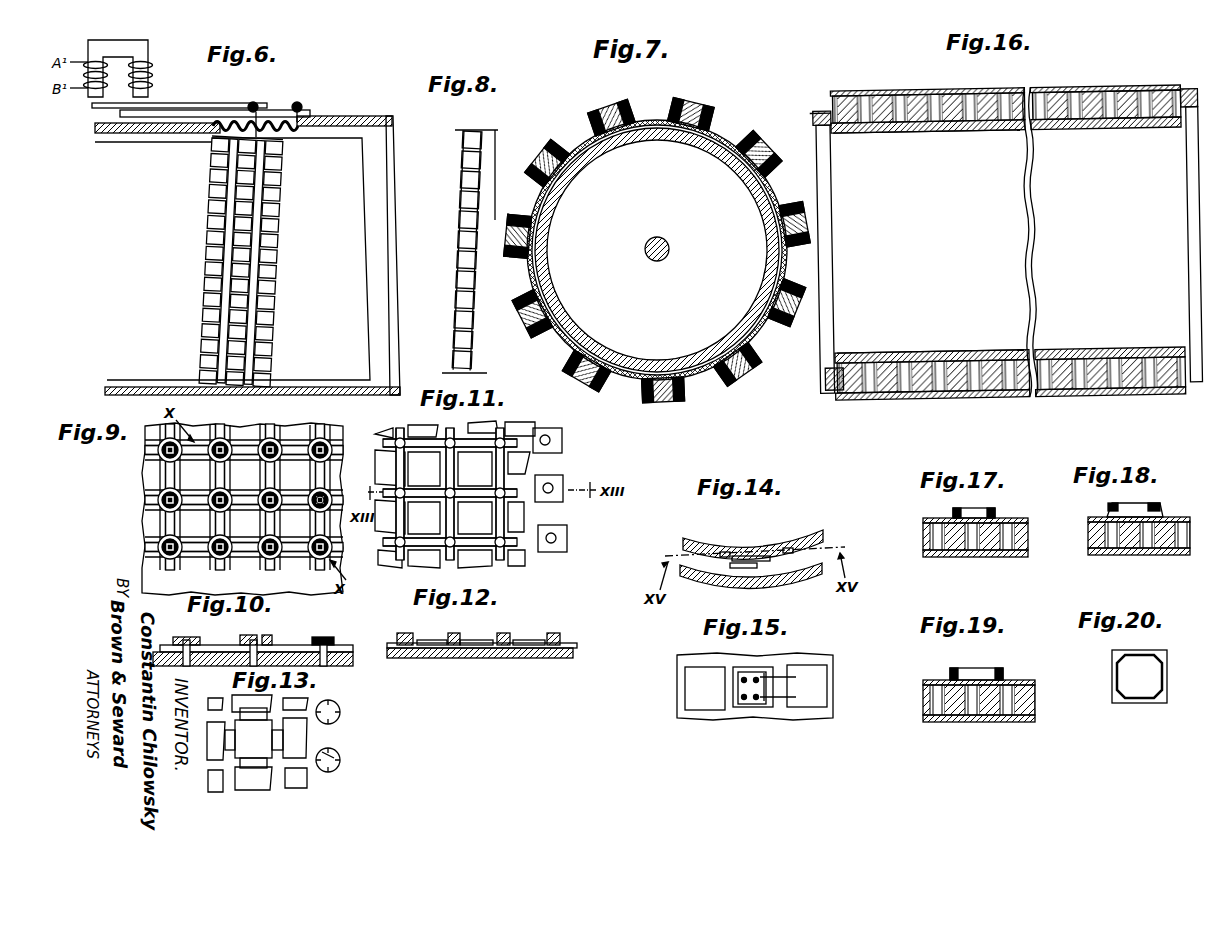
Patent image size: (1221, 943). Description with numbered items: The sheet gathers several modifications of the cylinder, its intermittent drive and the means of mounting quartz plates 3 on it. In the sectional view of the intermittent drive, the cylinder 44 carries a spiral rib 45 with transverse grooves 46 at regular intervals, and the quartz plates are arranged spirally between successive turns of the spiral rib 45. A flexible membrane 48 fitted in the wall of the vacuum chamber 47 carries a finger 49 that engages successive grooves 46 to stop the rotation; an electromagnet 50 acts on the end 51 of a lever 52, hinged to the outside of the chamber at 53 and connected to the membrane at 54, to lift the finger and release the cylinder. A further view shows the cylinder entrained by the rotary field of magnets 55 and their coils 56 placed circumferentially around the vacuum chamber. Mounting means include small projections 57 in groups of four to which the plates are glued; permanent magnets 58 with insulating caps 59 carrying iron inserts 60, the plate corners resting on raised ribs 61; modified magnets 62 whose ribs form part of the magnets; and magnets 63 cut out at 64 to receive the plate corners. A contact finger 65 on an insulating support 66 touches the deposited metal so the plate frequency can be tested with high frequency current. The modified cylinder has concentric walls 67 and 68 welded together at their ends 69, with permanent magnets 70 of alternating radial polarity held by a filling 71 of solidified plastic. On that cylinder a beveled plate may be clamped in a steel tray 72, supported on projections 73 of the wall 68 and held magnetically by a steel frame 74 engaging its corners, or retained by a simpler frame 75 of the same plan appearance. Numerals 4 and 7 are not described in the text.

In FIG. 6, the quartz plates 3 is at (281, 184).
In FIG. 8, the quartz plates 3 is at (463, 215).
In FIG. 9, the quartz plates 3 is at (242, 509).
In FIG. 11, the quartz plates 3 is at (455, 494).
In FIG. 10, the quartz plates 3 is at (292, 645).
In FIG. 12, the quartz plates 3 is at (430, 643).
In FIG. 13, the quartz plates 3 is at (257, 743).
In FIG. 14, the quartz plates 3 is at (745, 553).
In FIG. 15, the quartz plates 3 is at (695, 690).
In FIG. 17, the quartz plates 3 is at (974, 499).
In FIG. 7, the shaft 4 is at (650, 260).
In FIG. 15, the plate 7 is at (745, 708).
In FIG. 6, the cylinder 44 is at (232, 259).
In FIG. 6, the spiral rib 45 is at (212, 205).
In FIG. 6, the transverse grooves 46 is at (212, 300).
In FIG. 6, the vacuum chamber 47 is at (350, 120).
In FIG. 6, the flexible membrane 48 is at (268, 122).
In FIG. 6, the finger 49 is at (216, 148).
In FIG. 6, the electromagnet 50 is at (148, 50).
In FIG. 6, the lever end 51 is at (179, 95).
In FIG. 6, the lever 52 is at (215, 110).
In FIG. 6, the hinge 53 is at (302, 104).
In FIG. 6, the membrane connection 54 is at (258, 102).
In FIG. 7, the magnets 55 is at (772, 150).
In FIG. 7, the coils 56 is at (688, 108).
In FIG. 8, the projections 57 is at (466, 272).
In FIG. 9, the permanent magnets 58 is at (308, 496).
In FIG. 10, the permanent magnets 58 is at (220, 650).
In FIG. 9, the cap 59 is at (228, 540).
In FIG. 10, the cap 59 is at (176, 640).
In FIG. 9, the iron insert 60 is at (160, 500).
In FIG. 10, the iron insert 60 is at (333, 624).
In FIG. 10, the raised ribs 61 is at (322, 640).
In FIG. 11, the magnets 62 is at (496, 494).
In FIG. 12, the magnets 62 is at (500, 634).
In FIG. 13, the magnets 63 is at (341, 710).
In FIG. 13, the cut-out recesses 64 is at (335, 752).
In FIG. 15, the contact finger 65 is at (768, 700).
In FIG. 14, the insulating support 66 is at (740, 570).
In FIG. 16, the inner cylindrical wall 67 is at (1007, 242).
In FIG. 16, the outer cylindrical wall 68 is at (1120, 90).
In FIG. 16, the ends 69 is at (824, 106).
In FIG. 16, the permanent magnets 70 is at (905, 95).
In FIG. 16, the filling 71 is at (942, 120).
In FIG. 17, the steel tray 72 is at (955, 514).
In FIG. 18, the projections 73 is at (1158, 512).
In FIG. 18, the steel frame 74 is at (1110, 505).
In FIG. 20, the steel frame 74 is at (1160, 657).
In FIG. 19, the frame 75 is at (995, 670).